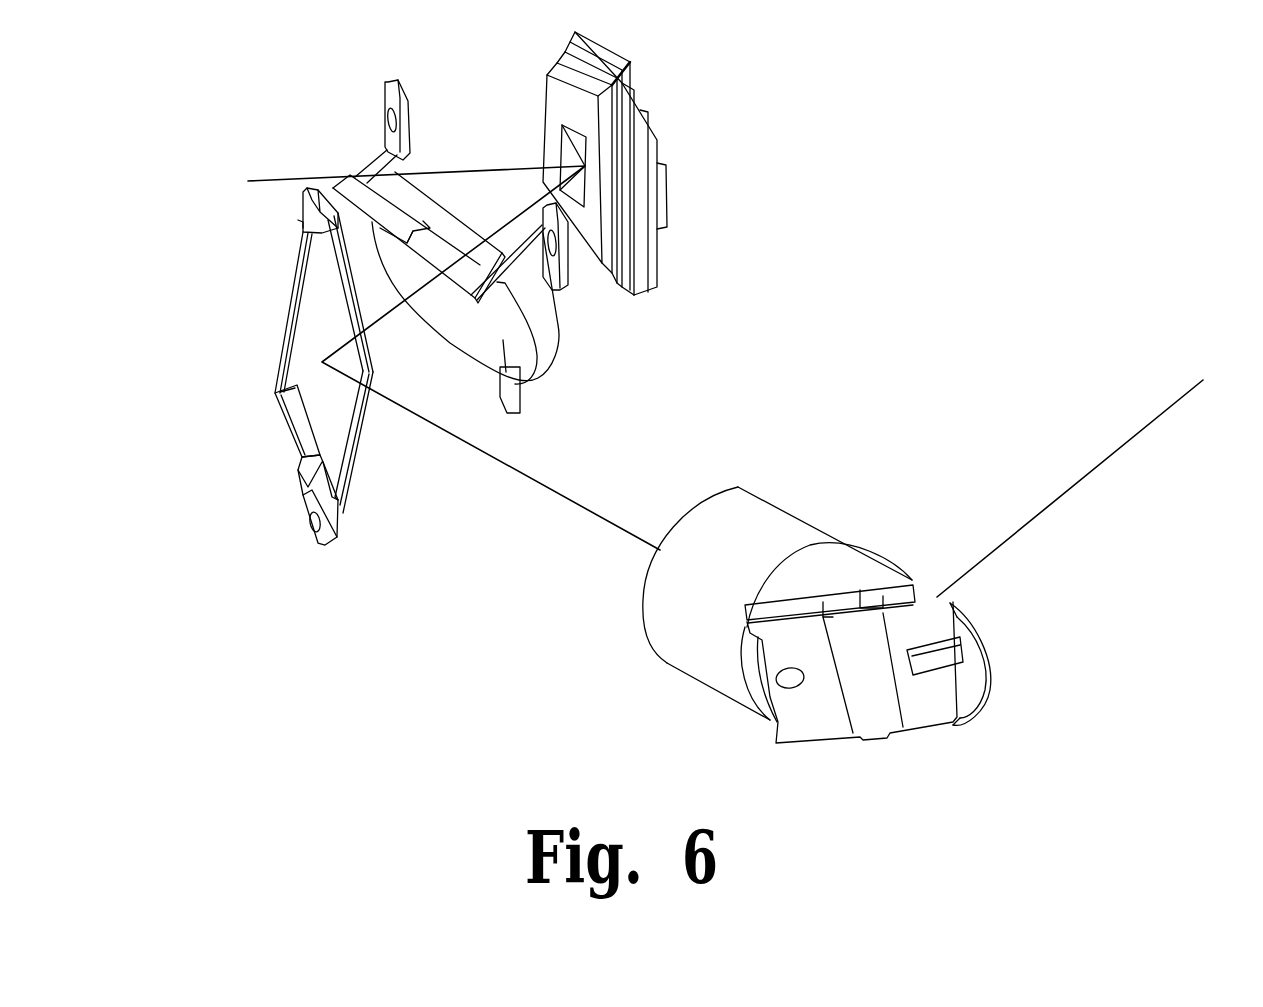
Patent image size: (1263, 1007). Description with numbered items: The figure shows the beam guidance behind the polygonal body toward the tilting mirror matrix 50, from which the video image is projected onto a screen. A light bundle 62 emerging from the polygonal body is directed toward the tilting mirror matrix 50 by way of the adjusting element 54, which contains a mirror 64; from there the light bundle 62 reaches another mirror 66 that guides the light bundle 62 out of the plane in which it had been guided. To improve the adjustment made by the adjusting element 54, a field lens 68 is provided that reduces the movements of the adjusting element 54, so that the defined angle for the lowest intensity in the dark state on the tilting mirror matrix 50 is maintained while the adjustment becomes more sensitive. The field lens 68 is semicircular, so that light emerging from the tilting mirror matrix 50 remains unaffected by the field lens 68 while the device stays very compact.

The tilting mirror matrix 50 is at (567, 152).
The adjusting element 54 is at (683, 615).
The light bundle 62 is at (1113, 462).
The mirror 64 is at (840, 588).
The mirror 66 is at (318, 335).
The field lens 68 is at (522, 390).